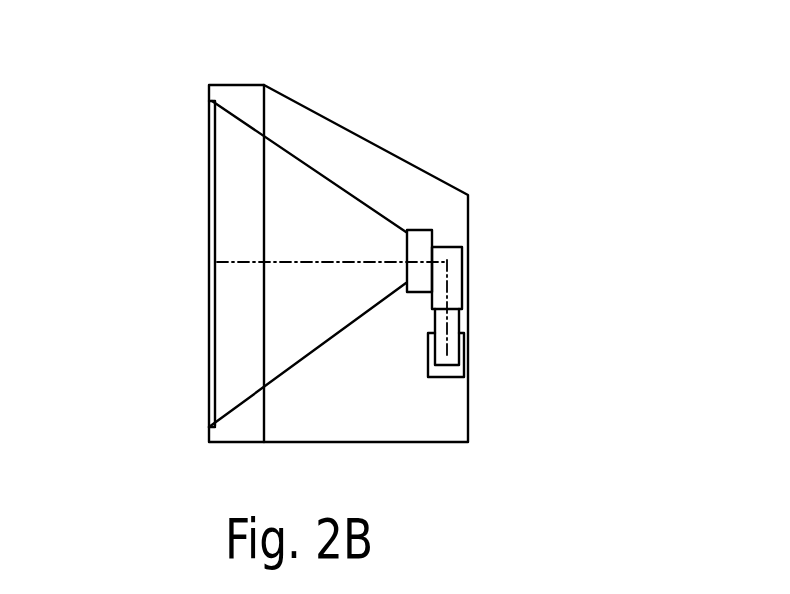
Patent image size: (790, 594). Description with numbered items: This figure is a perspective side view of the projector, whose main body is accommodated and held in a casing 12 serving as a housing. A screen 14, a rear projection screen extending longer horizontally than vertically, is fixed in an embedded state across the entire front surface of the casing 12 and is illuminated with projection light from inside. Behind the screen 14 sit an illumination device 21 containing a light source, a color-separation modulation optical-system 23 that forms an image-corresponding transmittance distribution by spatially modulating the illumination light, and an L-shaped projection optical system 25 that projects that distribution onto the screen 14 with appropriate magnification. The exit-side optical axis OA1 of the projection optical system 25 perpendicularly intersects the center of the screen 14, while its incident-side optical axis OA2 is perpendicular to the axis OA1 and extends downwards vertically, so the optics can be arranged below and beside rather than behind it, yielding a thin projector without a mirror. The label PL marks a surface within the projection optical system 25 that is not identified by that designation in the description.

The casing 12 is at (387, 148).
The screen 14 is at (208, 222).
The partially reflecting (beam splitting) layer PL is at (283, 147).
The projection optical system 25 is at (448, 247).
The color-separation modulation optical-system 23 is at (469, 318).
The illumination device 21 is at (468, 356).
The exit-side optical axis OA1 is at (328, 262).
The incident-side optical axis OA2 is at (447, 284).